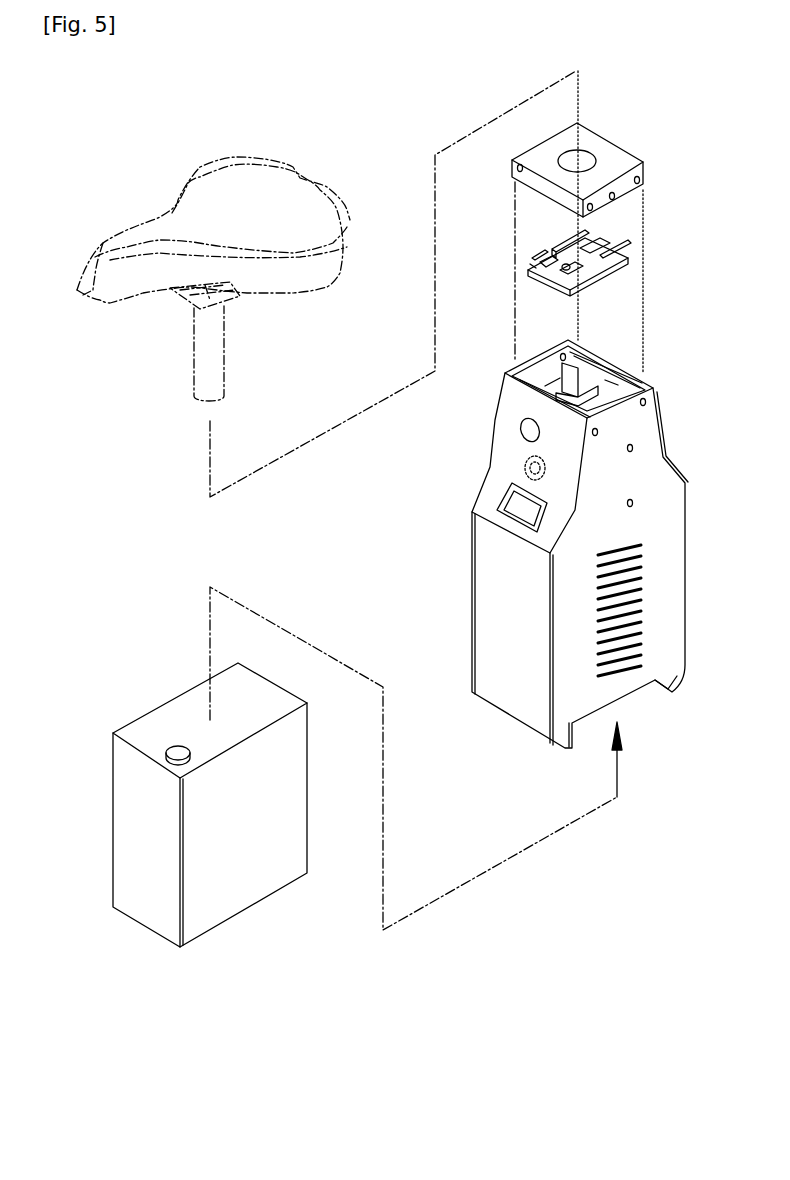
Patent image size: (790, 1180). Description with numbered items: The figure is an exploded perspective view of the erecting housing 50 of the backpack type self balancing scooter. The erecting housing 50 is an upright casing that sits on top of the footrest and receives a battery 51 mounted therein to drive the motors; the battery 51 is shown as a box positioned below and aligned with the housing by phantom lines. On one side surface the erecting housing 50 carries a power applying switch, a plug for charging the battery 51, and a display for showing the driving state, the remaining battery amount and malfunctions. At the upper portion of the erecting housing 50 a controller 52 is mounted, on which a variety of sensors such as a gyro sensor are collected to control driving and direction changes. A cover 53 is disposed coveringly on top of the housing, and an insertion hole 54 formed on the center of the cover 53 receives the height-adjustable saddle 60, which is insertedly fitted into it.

The erecting housing 50 is at (482, 598).
The battery 51 is at (152, 728).
The controller 52 is at (598, 277).
The cover 53 is at (580, 164).
The insertion hole 54 is at (566, 157).
The saddle 60 is at (232, 170).